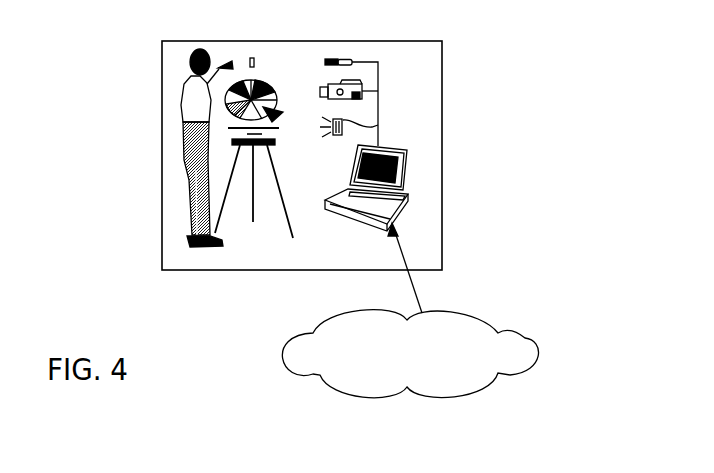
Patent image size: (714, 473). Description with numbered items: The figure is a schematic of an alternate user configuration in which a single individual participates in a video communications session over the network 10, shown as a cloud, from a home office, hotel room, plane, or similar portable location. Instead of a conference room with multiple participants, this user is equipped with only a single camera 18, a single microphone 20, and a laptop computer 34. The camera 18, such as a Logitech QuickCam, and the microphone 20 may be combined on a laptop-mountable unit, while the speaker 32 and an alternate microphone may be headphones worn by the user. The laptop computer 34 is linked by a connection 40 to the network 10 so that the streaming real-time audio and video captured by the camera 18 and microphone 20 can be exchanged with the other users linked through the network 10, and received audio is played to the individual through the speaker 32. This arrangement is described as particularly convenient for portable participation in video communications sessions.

The network 10 is at (383, 199).
The camera 18 is at (366, 80).
The microphone 20 is at (343, 59).
The speaker 32 is at (372, 128).
The laptop computer 34 is at (413, 186).
The network 40 is at (417, 288).